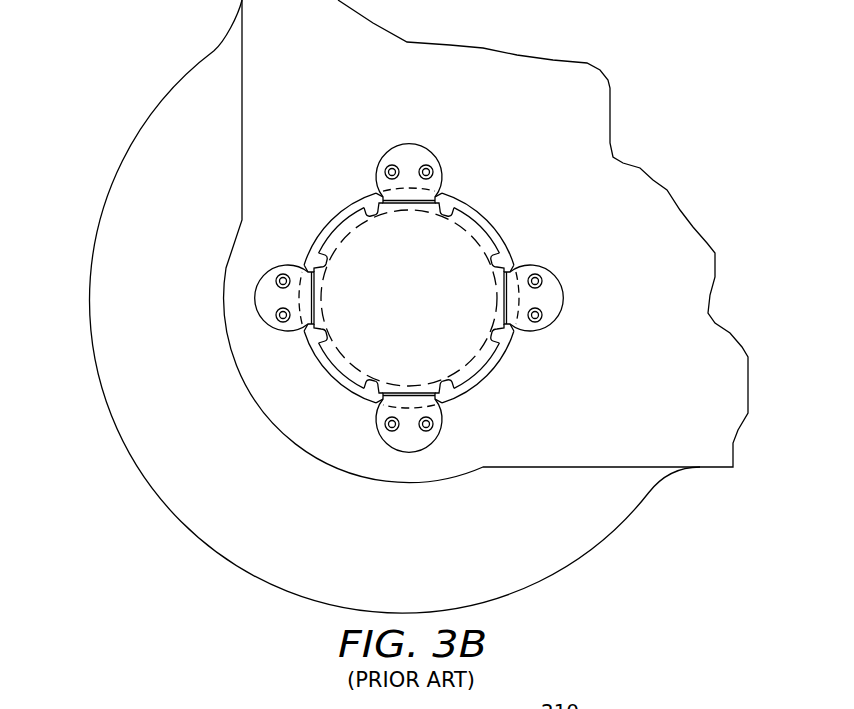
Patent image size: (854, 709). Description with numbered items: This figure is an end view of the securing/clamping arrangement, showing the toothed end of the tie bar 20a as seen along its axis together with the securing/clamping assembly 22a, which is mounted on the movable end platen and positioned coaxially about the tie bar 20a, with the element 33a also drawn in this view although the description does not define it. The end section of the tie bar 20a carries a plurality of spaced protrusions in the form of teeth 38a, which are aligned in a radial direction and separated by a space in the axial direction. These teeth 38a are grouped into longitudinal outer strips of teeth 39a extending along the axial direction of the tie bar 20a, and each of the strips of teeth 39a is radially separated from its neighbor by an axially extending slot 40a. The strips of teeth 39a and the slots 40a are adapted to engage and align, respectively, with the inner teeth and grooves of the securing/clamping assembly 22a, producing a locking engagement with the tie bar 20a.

The tie bar 20a is at (458, 353).
The securing/clamping assembly 22a is at (107, 196).
The mounting pad 33a is at (550, 307).
The teeth 38a is at (467, 210).
The outer strips of teeth 39a is at (508, 239).
The slots 40a is at (313, 293).